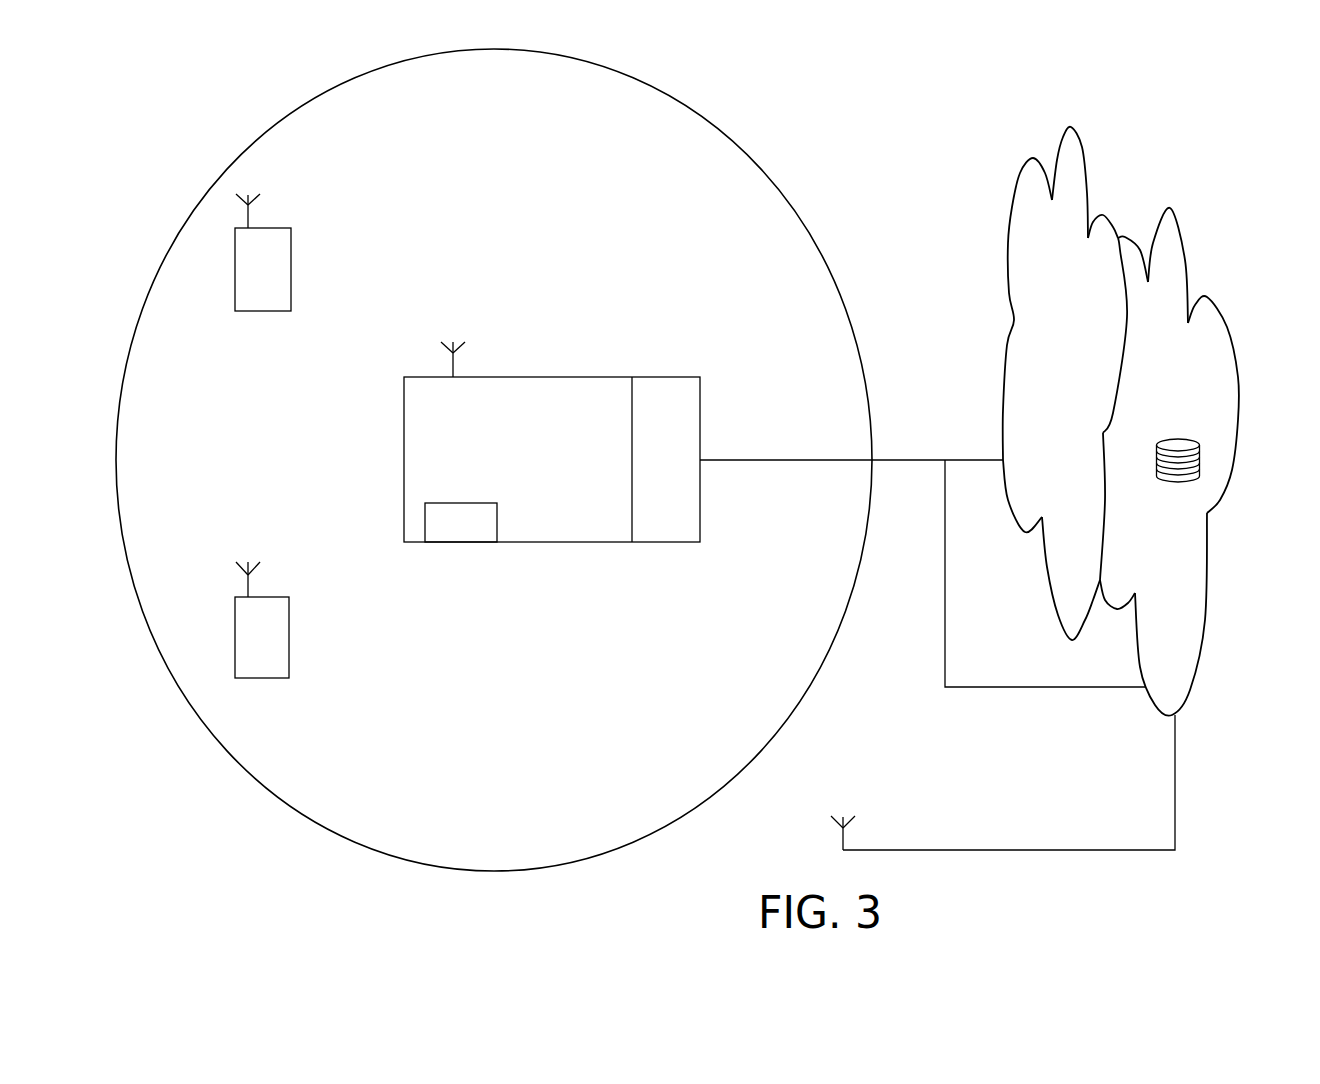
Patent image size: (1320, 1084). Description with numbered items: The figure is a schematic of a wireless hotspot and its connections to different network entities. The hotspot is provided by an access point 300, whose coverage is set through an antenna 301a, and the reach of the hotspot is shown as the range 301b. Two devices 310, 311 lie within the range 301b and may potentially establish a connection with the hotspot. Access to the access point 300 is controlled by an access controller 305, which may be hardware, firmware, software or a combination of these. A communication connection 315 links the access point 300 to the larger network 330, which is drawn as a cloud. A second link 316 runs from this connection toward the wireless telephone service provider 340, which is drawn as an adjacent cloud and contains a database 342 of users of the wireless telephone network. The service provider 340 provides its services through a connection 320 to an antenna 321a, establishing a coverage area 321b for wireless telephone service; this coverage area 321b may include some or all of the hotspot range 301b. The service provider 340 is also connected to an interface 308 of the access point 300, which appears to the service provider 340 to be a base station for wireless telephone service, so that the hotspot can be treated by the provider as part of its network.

The access point 300 is at (577, 509).
The antenna 301a is at (466, 364).
The range 301b is at (472, 99).
The access controller 305 is at (460, 543).
The interface 308 is at (657, 543).
The device 310 is at (291, 270).
The device 311 is at (289, 660).
The communication connection 315 is at (910, 460).
The wired link to network 316 is at (960, 687).
The connection 320 is at (1020, 850).
The antenna 321a is at (855, 838).
The coverage area 321b is at (805, 767).
The larger network 330 is at (1084, 314).
The wireless telephone service provider 340 is at (1201, 417).
The database 342 is at (1175, 495).